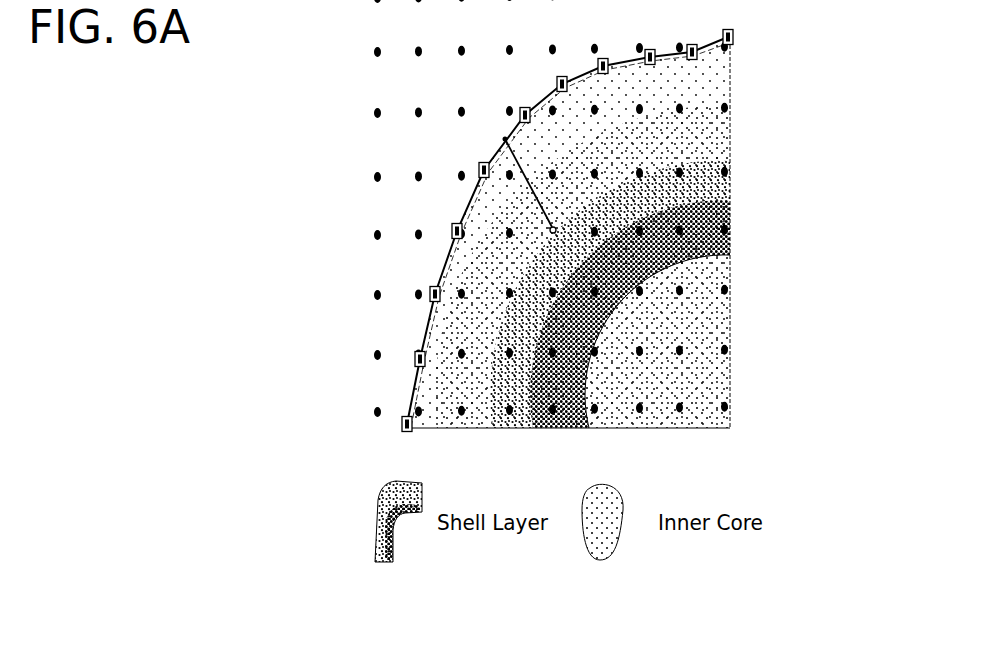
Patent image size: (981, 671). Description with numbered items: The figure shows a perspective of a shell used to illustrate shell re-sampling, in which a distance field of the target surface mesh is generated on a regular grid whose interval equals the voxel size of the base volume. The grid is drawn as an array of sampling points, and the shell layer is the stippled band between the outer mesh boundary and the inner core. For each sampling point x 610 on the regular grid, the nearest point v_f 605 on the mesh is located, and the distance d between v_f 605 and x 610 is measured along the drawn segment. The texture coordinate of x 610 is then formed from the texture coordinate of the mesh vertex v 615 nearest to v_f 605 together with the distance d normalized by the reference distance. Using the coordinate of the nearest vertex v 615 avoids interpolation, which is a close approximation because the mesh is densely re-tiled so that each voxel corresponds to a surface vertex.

The nearest point v_f 605 is at (503, 134).
The sampling point x 610 is at (556, 237).
The mesh vertex v 615 is at (540, 103).